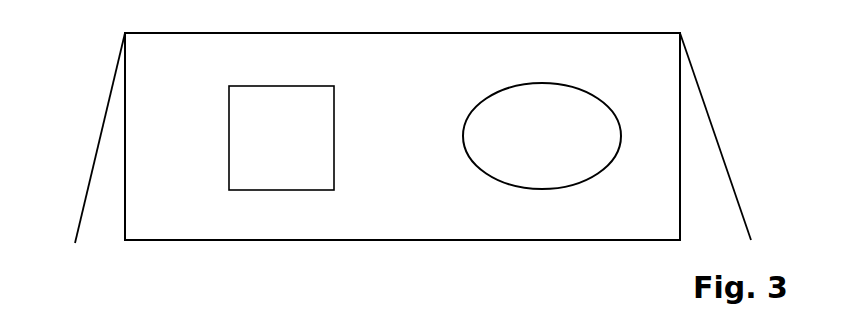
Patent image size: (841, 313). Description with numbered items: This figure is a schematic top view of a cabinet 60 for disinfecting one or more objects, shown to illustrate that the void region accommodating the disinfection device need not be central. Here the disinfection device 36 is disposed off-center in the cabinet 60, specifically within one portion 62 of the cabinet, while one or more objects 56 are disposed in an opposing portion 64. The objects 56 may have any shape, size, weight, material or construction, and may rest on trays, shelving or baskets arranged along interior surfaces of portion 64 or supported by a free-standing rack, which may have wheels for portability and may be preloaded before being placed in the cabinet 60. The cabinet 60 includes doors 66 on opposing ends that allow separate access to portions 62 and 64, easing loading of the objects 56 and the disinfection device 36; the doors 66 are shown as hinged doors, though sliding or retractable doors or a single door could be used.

The cabinet 60 is at (738, 42).
The doors 66 is at (92, 163).
The objects 56 is at (297, 148).
The disinfection device 36 is at (527, 146).
The portion 64 is at (248, 223).
The portion 62 is at (559, 215).